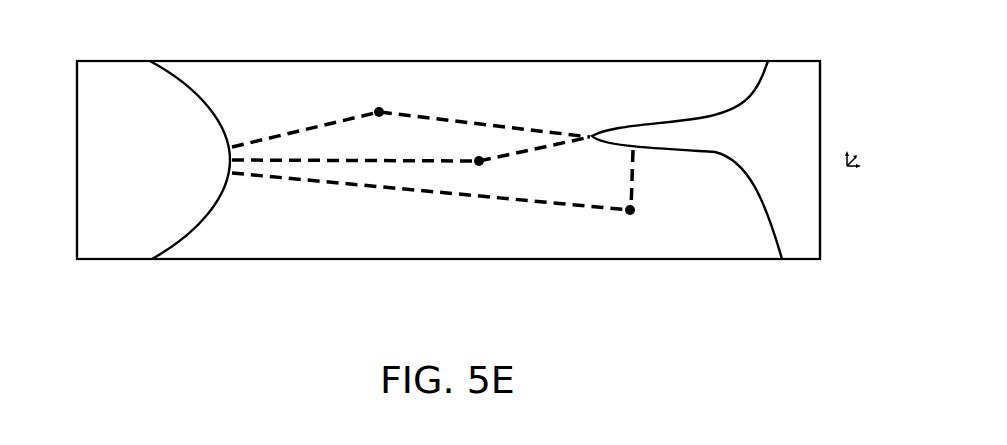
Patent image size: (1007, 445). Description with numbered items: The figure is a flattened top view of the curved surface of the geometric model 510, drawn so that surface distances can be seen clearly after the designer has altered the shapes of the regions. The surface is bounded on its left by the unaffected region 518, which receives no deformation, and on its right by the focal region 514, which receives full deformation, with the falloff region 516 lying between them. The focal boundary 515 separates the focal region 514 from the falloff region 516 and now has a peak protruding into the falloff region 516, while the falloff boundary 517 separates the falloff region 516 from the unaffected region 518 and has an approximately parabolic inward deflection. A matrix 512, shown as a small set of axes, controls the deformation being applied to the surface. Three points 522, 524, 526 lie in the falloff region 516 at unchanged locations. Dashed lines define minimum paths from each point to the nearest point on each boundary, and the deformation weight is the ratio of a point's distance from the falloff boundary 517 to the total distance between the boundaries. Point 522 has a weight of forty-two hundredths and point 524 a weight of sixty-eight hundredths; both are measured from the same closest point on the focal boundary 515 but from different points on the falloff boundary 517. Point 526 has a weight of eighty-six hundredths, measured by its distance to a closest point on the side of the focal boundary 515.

The geometric model 510 is at (465, 259).
The matrix 512 is at (861, 163).
The focal region 514 is at (805, 236).
The focal boundary 515 is at (758, 88).
The falloff region 516 is at (303, 237).
The falloff boundary 517 is at (198, 85).
The unaffected region 518 is at (104, 238).
The point 522 is at (377, 116).
The point 524 is at (483, 165).
The point 526 is at (626, 216).